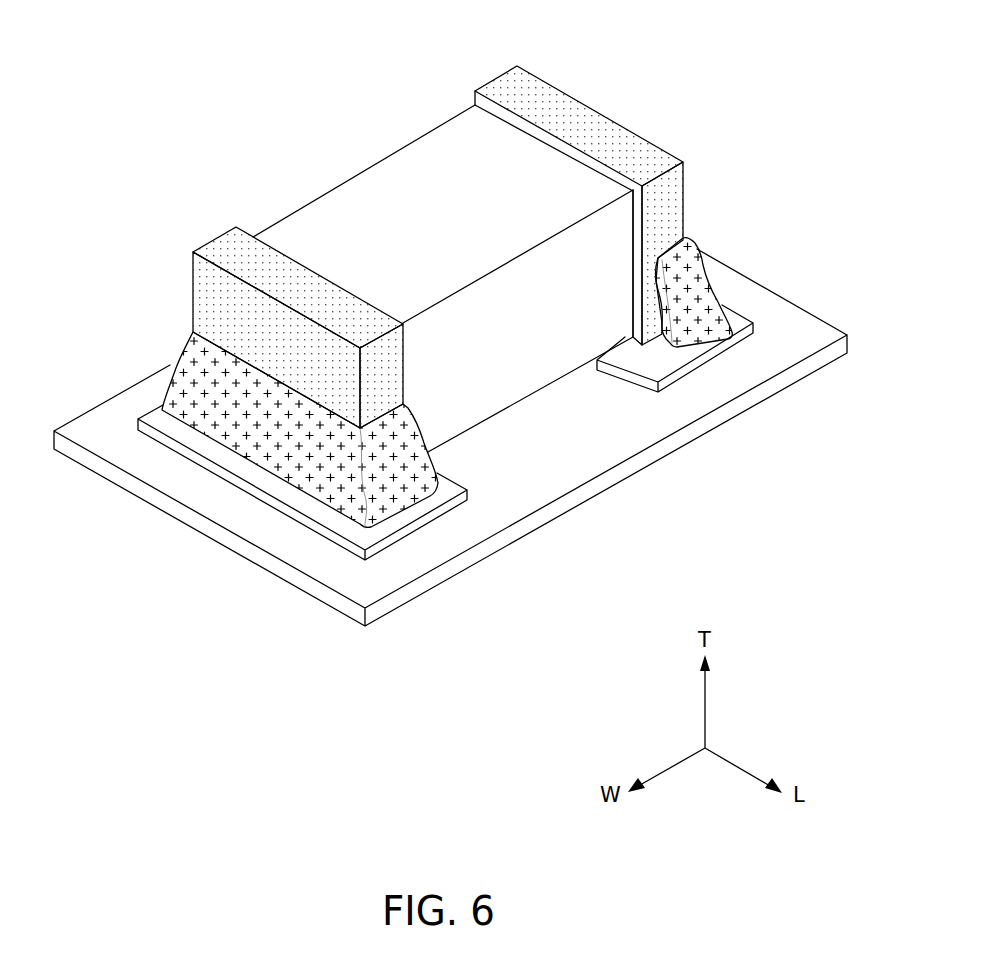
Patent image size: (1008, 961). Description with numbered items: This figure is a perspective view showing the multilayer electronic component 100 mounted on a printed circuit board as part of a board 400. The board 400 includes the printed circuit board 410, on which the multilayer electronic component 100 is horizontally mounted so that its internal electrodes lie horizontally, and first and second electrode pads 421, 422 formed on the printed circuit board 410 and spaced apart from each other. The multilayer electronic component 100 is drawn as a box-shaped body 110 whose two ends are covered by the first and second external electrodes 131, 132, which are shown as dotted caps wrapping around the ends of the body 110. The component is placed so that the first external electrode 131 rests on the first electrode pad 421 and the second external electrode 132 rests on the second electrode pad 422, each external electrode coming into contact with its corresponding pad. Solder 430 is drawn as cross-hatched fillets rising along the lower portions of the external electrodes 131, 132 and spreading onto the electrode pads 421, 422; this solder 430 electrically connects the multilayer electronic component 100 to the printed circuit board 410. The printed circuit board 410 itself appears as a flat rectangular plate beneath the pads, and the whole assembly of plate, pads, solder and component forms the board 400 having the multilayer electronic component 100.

The multilayer electronic component 100 is at (425, 228).
The ceramic body 110 is at (412, 162).
The first external electrode 131 is at (227, 248).
The second external electrode 132 is at (507, 87).
The board 400 is at (450, 424).
The printed circuit board 410 is at (598, 488).
The first electrode pad 421 is at (417, 528).
The second electrode pad 422 is at (700, 362).
The solder 430 is at (697, 281).